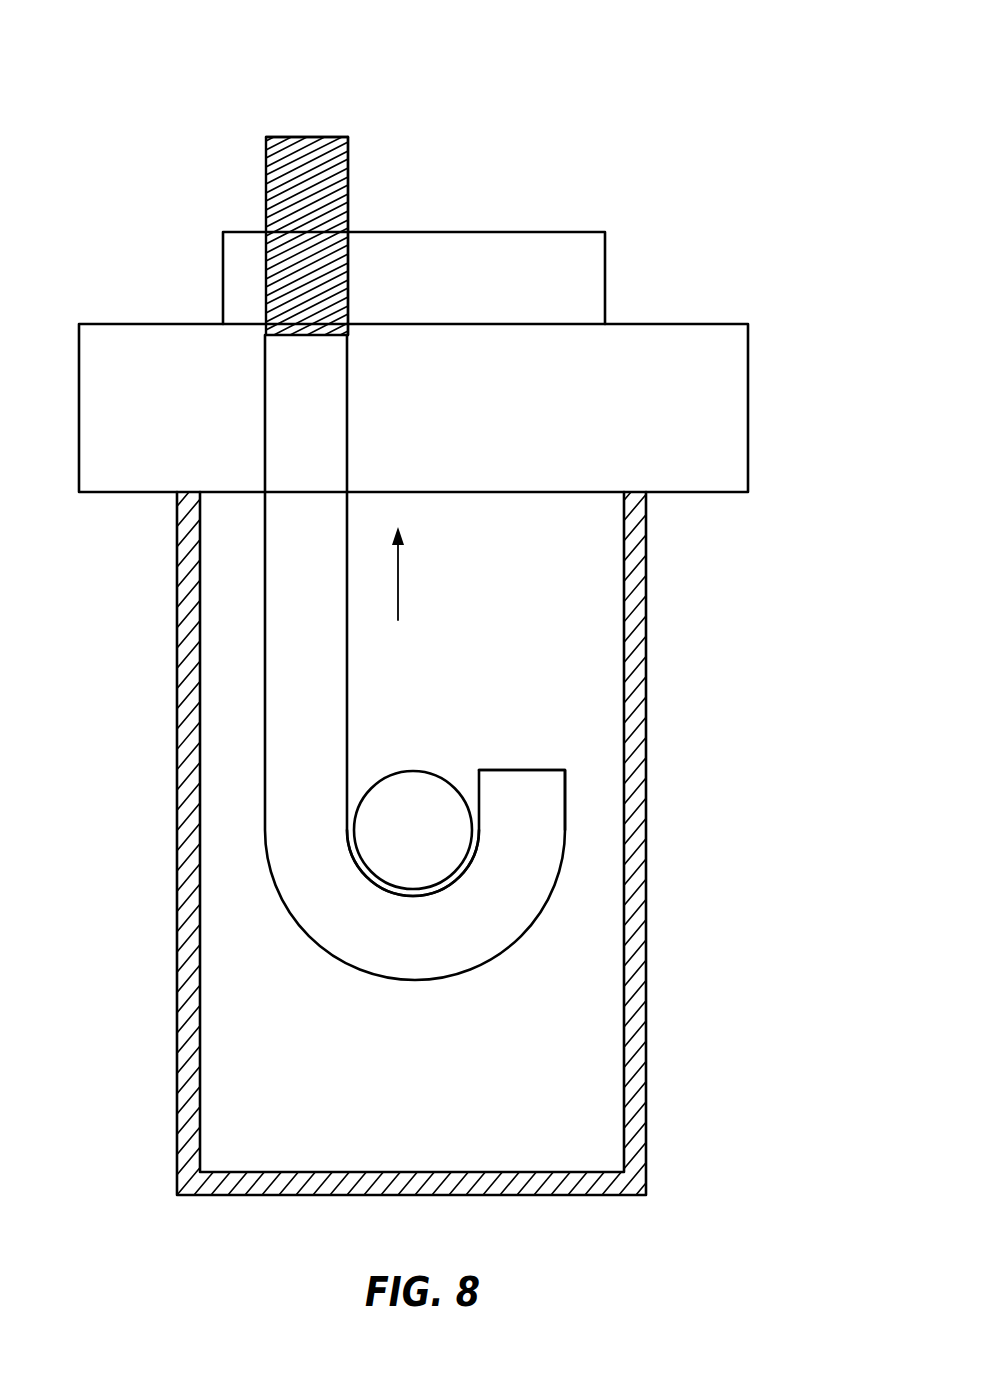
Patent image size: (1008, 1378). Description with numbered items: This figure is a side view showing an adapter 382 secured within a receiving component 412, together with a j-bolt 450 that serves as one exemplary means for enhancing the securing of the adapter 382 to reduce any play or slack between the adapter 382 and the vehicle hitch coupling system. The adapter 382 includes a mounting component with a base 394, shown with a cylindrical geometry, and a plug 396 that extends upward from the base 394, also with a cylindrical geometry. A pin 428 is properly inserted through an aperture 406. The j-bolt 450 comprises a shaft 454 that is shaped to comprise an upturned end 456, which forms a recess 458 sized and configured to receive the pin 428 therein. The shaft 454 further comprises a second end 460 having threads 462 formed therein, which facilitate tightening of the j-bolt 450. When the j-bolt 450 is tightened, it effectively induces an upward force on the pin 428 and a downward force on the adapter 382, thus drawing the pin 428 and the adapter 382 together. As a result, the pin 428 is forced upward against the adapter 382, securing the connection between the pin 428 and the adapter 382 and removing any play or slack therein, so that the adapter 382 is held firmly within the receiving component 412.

The adapter 382 is at (478, 354).
The base 394 is at (717, 386).
The plug 396 is at (578, 285).
The j-bolt 450 is at (298, 122).
The second end 460 is at (266, 161).
The threads 462 is at (349, 192).
The receiving component 412 is at (634, 579).
The shaft 454 is at (293, 757).
The upturned end 456 is at (528, 792).
The aperture 406 is at (420, 752).
The pin 428 is at (423, 802).
The recess 458 is at (392, 735).